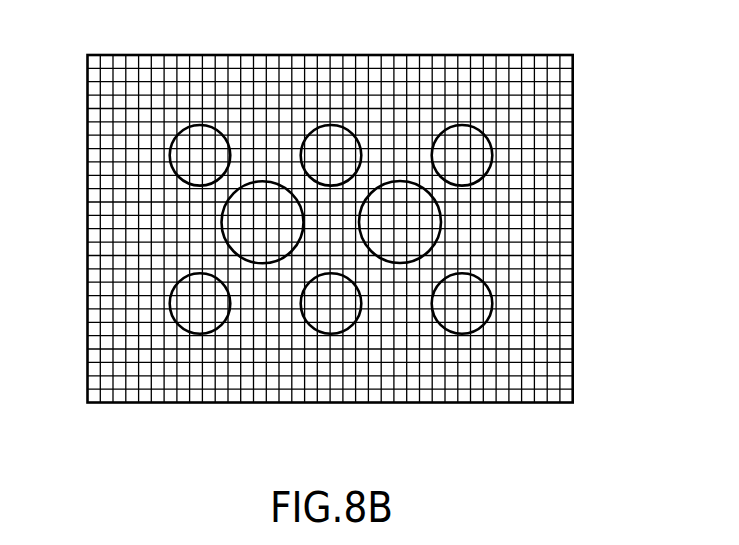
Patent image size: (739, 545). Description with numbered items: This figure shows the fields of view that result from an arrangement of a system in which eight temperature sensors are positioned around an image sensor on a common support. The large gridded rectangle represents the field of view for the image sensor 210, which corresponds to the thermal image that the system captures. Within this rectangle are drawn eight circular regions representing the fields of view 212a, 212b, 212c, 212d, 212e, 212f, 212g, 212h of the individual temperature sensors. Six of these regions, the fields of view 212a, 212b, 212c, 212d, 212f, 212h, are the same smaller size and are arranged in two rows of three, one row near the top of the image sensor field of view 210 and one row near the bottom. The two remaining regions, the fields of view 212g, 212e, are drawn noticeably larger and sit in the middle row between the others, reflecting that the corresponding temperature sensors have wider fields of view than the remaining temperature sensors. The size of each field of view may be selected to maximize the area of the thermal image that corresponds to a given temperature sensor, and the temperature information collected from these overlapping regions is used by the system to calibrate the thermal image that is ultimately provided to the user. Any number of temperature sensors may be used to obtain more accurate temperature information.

The field of view for the image sensor 210 is at (574, 120).
The field of view of temperature sensor 212a is at (452, 126).
The field of view of temperature sensor 212b is at (473, 334).
The field of view of temperature sensor 212c is at (210, 334).
The field of view of temperature sensor 212d is at (193, 126).
The field of view of temperature sensor 212e is at (441, 230).
The field of view of temperature sensor 212f is at (341, 334).
The field of view of temperature sensor 212g is at (217, 228).
The field of view of temperature sensor 212h is at (323, 126).